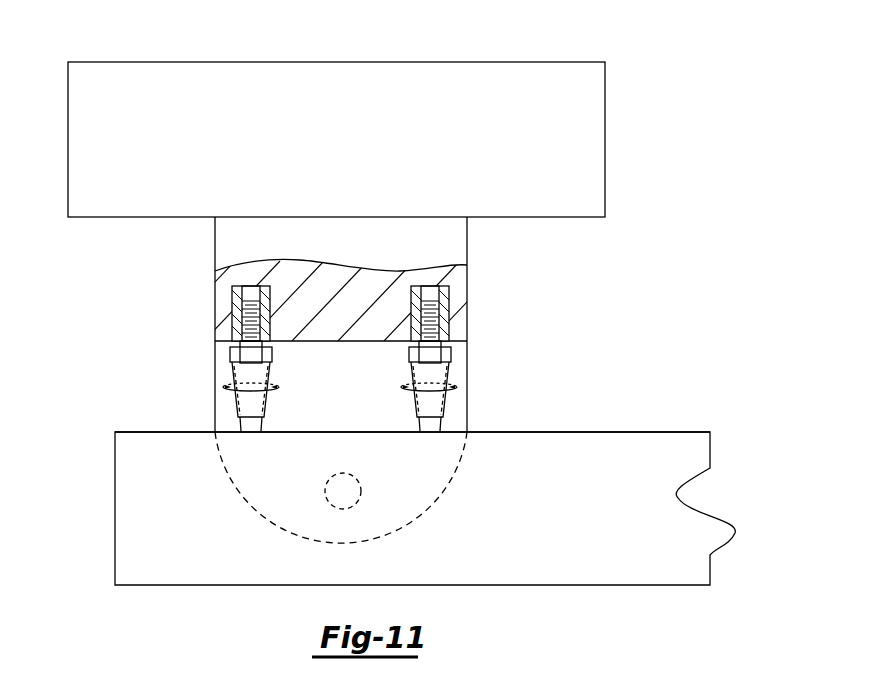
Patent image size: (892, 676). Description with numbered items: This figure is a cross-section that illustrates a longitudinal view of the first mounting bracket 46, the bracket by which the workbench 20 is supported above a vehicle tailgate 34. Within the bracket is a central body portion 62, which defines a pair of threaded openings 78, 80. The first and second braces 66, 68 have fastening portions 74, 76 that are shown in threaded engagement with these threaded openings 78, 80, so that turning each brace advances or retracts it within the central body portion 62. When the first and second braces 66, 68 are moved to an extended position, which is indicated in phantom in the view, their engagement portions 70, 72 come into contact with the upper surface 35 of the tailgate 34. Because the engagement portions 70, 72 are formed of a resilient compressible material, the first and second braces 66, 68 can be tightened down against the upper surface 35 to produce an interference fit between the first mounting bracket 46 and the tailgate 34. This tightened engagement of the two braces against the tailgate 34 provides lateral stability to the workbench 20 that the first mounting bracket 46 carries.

The workbench 20 is at (338, 130).
The central body portion 62 is at (214, 245).
The first mounting bracket 46 is at (468, 238).
The threaded opening 78 is at (232, 297).
The threaded opening 80 is at (444, 305).
The fastening portion 74 is at (242, 343).
The fastening portion 76 is at (440, 344).
The first brace 66 is at (236, 402).
The second brace 68 is at (423, 407).
The engagement portion 70 is at (262, 401).
The engagement portion 72 is at (443, 404).
The tailgate 34 is at (567, 523).
The upper surface 35 is at (620, 432).